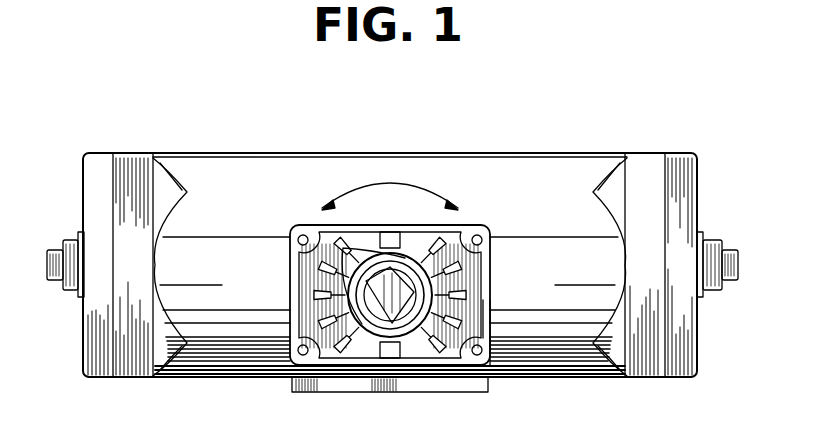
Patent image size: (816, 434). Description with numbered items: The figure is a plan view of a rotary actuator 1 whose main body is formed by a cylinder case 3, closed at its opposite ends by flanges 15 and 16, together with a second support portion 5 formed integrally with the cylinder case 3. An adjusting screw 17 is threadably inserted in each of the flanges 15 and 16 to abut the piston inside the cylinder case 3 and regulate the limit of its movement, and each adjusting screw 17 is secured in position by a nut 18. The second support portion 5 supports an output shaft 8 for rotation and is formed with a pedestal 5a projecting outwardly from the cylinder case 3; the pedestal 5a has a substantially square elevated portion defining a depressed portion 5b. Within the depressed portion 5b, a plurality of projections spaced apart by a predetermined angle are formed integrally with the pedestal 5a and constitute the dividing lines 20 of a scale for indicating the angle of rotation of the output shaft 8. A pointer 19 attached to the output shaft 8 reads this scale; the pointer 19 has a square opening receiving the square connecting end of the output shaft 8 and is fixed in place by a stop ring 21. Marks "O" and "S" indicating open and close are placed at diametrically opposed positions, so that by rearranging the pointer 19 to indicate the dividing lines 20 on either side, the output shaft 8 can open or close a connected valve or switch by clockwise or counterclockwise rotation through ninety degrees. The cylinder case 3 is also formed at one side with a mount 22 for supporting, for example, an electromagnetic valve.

The rotary actuator 1 is at (572, 156).
The cylinder case 3 is at (220, 154).
The second support portion 5 is at (487, 271).
The pedestal 5a is at (493, 337).
The depressed portion 5b is at (466, 306).
The output shaft 8 is at (408, 332).
The flange 15 is at (100, 163).
The flange 16 is at (684, 170).
The adjusting screw 17 is at (60, 283).
The nut 18 is at (80, 271).
The pointer 19 is at (352, 264).
The dividing lines of a scale 20 is at (318, 290).
The stop ring 21 is at (405, 270).
The mount 22 is at (313, 393).